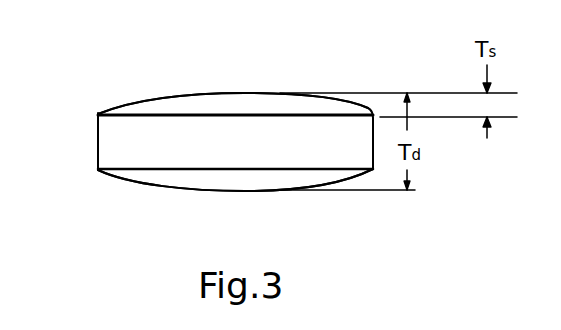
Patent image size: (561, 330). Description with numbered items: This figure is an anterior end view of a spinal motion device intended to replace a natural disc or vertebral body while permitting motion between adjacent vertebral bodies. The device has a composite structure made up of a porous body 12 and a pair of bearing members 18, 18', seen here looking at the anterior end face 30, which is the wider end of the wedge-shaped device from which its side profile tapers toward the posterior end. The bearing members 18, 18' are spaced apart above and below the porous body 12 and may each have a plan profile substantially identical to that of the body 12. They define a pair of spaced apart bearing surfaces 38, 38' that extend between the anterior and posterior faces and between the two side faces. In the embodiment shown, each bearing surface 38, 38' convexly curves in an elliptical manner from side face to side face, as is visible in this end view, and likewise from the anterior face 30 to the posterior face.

The porous body 12 is at (98, 127).
The anterior end face 30 is at (125, 146).
The bearing member 18 is at (235, 69).
The bearing surface 38 is at (233, 68).
The bearing member 18' is at (235, 205).
The bearing surface 38' is at (235, 210).